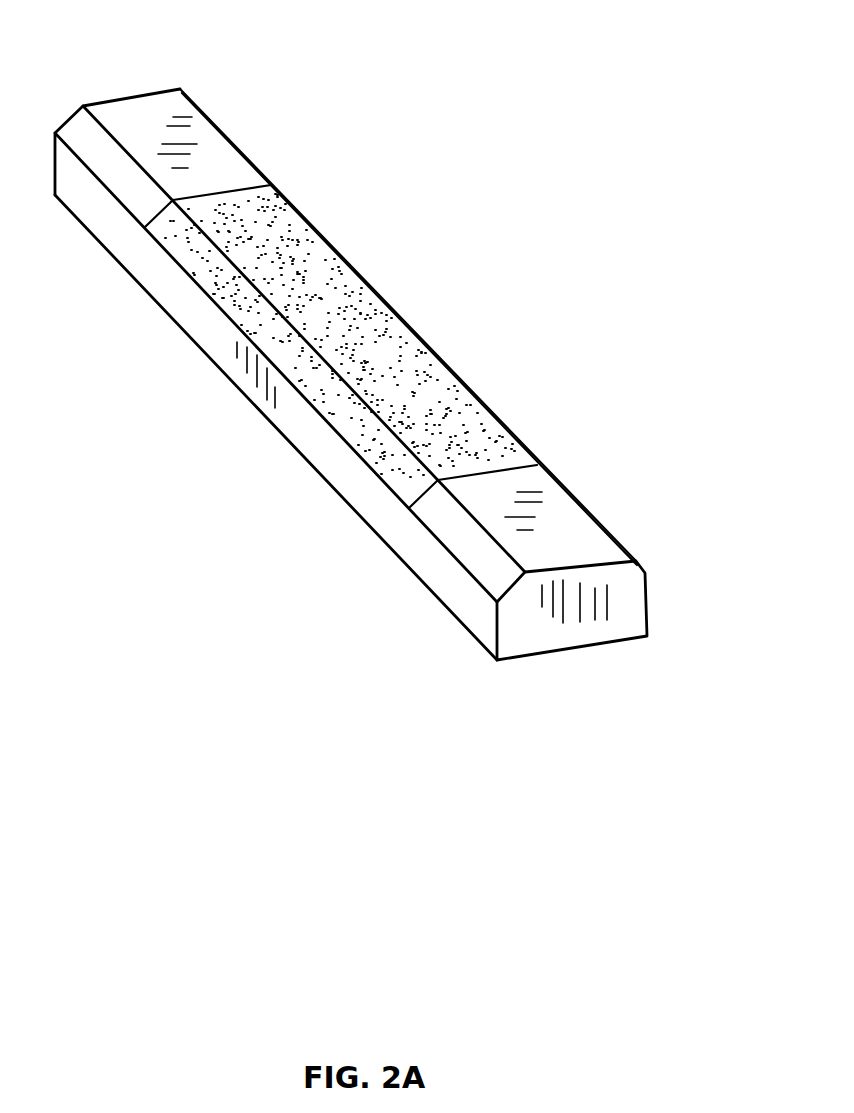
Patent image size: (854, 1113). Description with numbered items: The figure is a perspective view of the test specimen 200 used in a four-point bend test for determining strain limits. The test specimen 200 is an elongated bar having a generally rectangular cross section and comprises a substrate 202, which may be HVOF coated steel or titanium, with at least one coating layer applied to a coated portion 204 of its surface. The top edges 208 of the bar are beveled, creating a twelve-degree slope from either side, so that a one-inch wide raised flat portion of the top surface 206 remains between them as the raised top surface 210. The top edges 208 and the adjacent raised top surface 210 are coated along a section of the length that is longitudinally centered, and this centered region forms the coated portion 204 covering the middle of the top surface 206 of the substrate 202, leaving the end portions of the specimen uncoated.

The test specimen 200 is at (158, 73).
The substrate 202 is at (225, 133).
The coated portion 204 is at (330, 268).
The top surface 206 is at (237, 287).
The top edges 208 is at (328, 390).
The raised top surface 210 is at (463, 418).